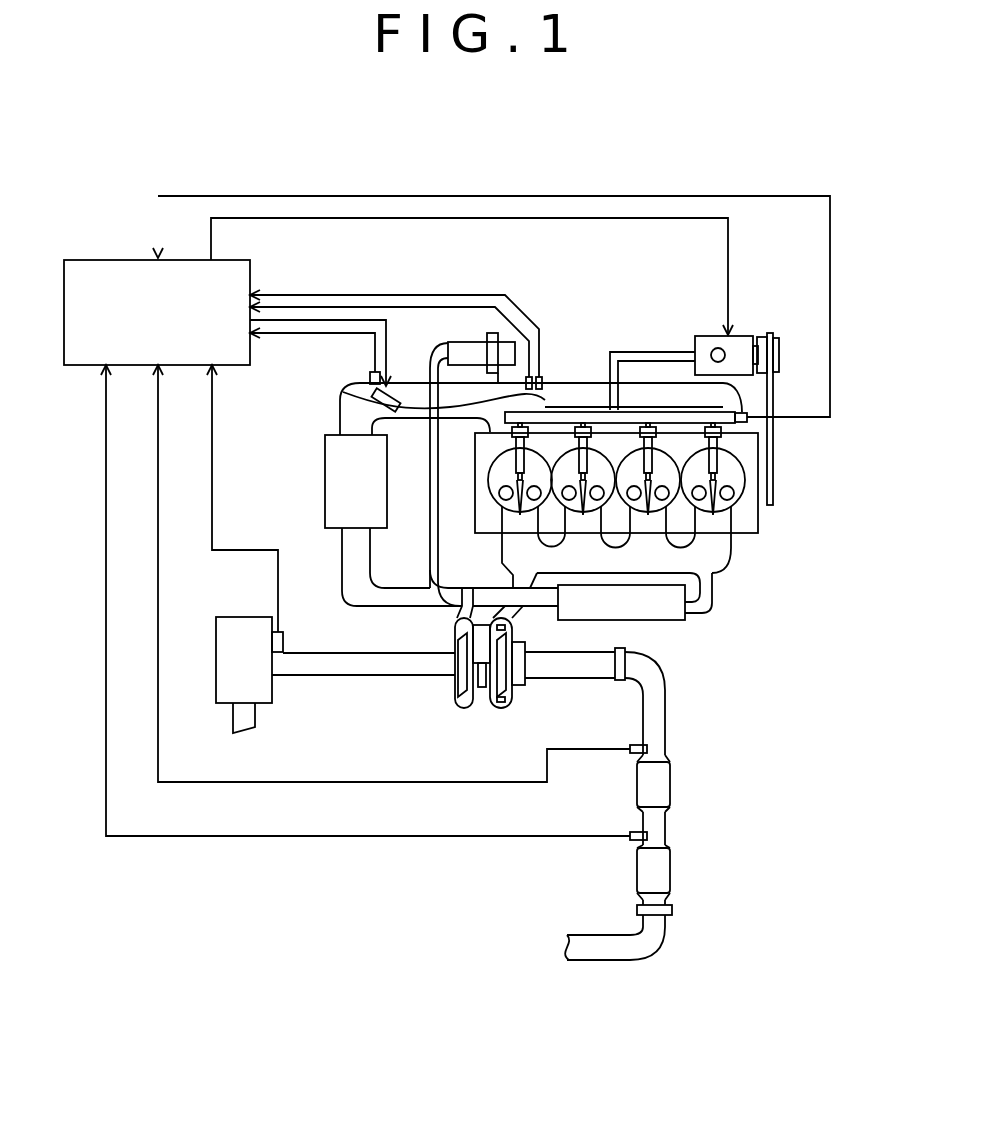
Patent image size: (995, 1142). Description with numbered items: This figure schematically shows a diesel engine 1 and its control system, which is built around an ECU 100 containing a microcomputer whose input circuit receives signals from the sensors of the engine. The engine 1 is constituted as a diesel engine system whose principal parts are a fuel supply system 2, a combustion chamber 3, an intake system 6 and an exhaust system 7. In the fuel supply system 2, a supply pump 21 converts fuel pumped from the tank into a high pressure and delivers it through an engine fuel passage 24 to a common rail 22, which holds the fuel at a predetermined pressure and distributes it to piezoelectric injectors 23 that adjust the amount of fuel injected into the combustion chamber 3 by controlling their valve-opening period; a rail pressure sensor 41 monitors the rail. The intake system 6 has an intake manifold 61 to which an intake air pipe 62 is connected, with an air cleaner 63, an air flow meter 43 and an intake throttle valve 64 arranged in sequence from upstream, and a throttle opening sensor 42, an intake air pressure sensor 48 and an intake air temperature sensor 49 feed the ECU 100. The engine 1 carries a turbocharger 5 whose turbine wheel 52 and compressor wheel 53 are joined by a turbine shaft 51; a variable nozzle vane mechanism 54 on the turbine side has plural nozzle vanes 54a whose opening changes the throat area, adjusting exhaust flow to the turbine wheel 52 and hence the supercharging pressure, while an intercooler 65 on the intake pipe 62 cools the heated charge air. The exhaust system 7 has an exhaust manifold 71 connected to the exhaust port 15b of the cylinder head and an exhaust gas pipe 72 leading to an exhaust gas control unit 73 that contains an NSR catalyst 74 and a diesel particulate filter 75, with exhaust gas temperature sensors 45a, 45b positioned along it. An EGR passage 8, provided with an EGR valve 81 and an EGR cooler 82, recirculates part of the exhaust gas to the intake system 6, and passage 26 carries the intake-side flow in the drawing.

The ECU 100 is at (104, 258).
The diesel engine 1 is at (763, 532).
The fuel supply system 2 is at (764, 334).
The combustion chamber 3 is at (765, 500).
The turbocharger 5 is at (484, 690).
The intake system 6 is at (577, 376).
The exhaust system 7 is at (733, 551).
The EGR passage 8 is at (712, 590).
The exhaust port 15b is at (674, 543).
The supply pump 21 is at (714, 335).
The common rail 22 is at (745, 405).
The injector 23 is at (716, 440).
The engine fuel passage 24 is at (663, 352).
The intake passage 26 is at (430, 578).
The rail pressure sensor 41 is at (750, 420).
The throttle opening sensor 42 is at (372, 372).
The air flow meter 43 is at (284, 647).
The exhaust gas temperature sensor 45a is at (634, 755).
The exhaust gas temperature sensor 45b is at (634, 842).
The intake air pressure sensor 48 is at (540, 393).
The intake air temperature sensor 49 is at (433, 407).
The turbine shaft 51 is at (481, 662).
The turbine wheel 52 is at (503, 703).
The compressor wheel 53 is at (455, 690).
The variable nozzle vane mechanism 54 is at (522, 667).
The nozzle vane 54a is at (455, 635).
The intake manifold 61 is at (755, 386).
The intake air pipe 62 is at (340, 406).
The air cleaner 63 is at (233, 614).
The intake throttle valve 64 is at (345, 392).
The intercooler 65 is at (325, 467).
The exhaust manifold 71 is at (510, 566).
The exhaust gas pipe 72 is at (580, 655).
The exhaust gas control unit 73 is at (700, 833).
The NSR catalyst 74 is at (663, 785).
The diesel particulate filter 75 is at (663, 873).
The EGR valve 81 is at (478, 342).
The EGR cooler 82 is at (660, 622).